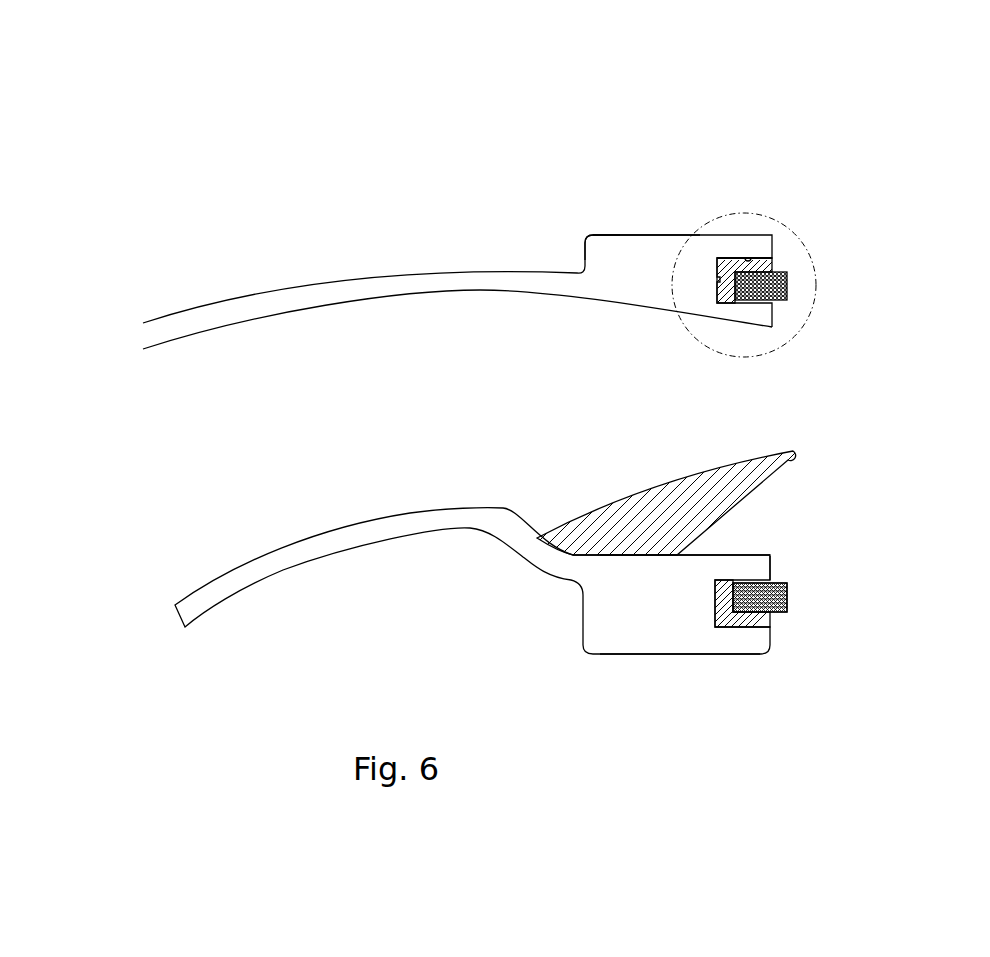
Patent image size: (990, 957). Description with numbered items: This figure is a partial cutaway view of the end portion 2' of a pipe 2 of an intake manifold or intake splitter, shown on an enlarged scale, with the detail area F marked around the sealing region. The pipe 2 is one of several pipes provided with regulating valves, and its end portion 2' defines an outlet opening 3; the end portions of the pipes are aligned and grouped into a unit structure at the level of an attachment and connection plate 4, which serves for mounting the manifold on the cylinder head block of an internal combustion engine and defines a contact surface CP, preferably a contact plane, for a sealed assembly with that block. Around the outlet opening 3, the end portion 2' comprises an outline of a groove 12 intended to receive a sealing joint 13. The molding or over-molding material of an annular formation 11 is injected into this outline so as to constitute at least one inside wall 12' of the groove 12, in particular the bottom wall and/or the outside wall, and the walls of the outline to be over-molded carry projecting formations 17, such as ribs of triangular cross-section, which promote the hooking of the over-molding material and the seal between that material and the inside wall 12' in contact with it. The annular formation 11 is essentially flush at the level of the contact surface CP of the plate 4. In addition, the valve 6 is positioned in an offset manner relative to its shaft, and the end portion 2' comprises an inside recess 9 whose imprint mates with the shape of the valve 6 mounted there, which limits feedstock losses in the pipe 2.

The pipe 2 is at (457, 292).
The end portion of the pipe 2' is at (579, 200).
The outlet opening 3 is at (823, 392).
The attachment and connection plate 4 is at (613, 253).
The valve 6 is at (767, 463).
The inside recess 9 is at (672, 556).
The annular formation 11 is at (730, 615).
The groove 12 is at (781, 297).
The inside wall of the groove 12' is at (737, 212).
The sealing joint 13 is at (793, 274).
The projecting formation 17 is at (717, 600).
The detail region F is at (801, 224).
The contact surface CP is at (773, 565).